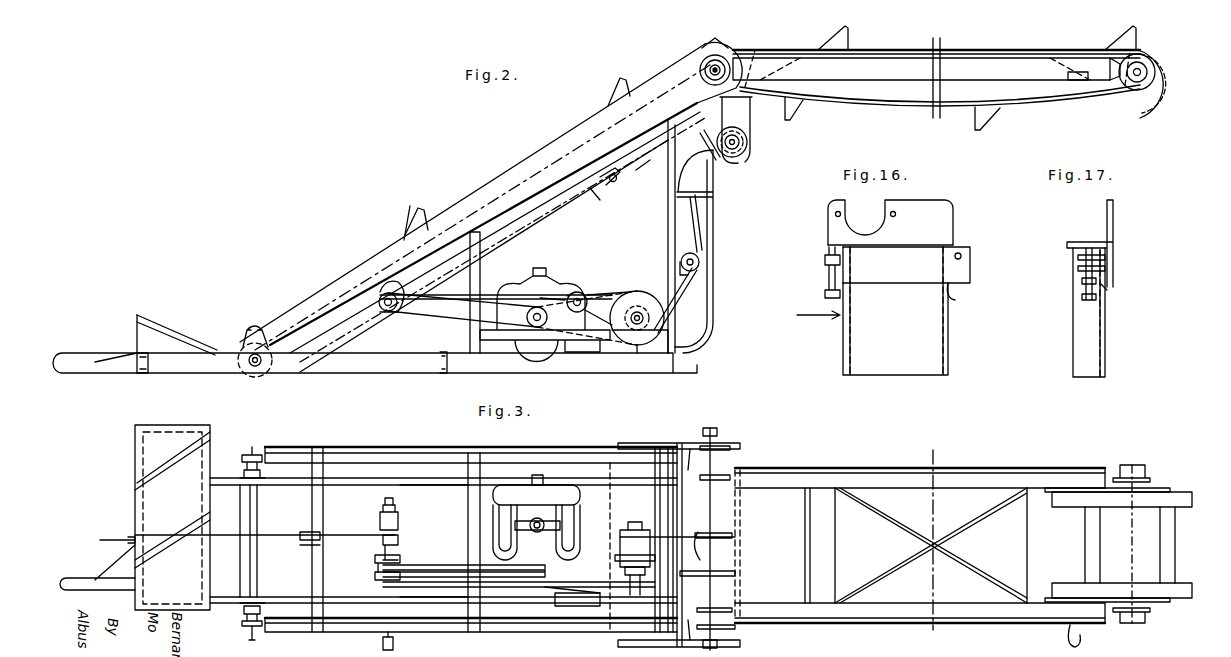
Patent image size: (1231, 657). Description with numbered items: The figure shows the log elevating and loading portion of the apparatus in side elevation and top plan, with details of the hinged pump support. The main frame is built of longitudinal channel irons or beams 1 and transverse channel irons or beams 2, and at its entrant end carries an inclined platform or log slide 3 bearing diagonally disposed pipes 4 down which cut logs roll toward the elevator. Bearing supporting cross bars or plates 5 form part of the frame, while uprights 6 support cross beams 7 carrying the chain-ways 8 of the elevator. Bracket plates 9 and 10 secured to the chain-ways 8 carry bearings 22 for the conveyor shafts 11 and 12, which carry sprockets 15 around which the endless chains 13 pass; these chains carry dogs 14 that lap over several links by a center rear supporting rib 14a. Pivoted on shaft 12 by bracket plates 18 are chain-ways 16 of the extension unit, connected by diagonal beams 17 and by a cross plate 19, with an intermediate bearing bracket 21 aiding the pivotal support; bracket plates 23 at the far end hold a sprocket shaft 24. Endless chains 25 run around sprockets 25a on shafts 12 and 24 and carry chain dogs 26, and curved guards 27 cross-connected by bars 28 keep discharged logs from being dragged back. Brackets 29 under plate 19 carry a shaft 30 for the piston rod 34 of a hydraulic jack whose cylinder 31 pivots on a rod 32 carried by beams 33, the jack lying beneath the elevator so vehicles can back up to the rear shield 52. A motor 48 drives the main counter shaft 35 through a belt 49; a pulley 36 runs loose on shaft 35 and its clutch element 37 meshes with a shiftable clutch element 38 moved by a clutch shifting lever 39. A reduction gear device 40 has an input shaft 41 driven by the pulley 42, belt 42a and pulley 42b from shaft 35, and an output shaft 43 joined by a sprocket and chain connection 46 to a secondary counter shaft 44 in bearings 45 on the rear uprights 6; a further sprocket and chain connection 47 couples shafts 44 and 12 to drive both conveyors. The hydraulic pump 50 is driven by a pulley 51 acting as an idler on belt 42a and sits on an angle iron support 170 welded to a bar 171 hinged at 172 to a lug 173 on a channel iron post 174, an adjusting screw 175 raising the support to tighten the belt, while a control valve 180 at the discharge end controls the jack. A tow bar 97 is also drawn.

In FIG. 2, the longitudinal channel irons or beams 1 is at (195, 370).
In FIG. 3, the longitudinal channel irons or beams 1 is at (224, 486).
In FIG. 2, the transverse channel irons or beams 2 is at (147, 361).
In FIG. 3, the transverse channel irons or beams 2 is at (137, 506).
In FIG. 2, the inclined platform or log slide 3 is at (137, 333).
In FIG. 3, the inclined platform or log slide 3 is at (150, 514).
In FIG. 2, the diagonally disposed pipes 4 is at (170, 329).
In FIG. 3, the diagonally disposed pipes 4 is at (170, 466).
In FIG. 3, the bearing supporting cross bars or plates 5 is at (398, 500).
In FIG. 2, the uprights 6 is at (668, 225).
In FIG. 2, the cross beams 7 is at (480, 225).
In FIG. 3, the cross beams 7 is at (468, 516).
In FIG. 2, the chain-ways 8 is at (299, 305).
In FIG. 3, the chain-ways 8 is at (450, 452).
In FIG. 2, the bracket plates 9 is at (332, 335).
In FIG. 3, the bracket plates 9 is at (311, 501).
In FIG. 3, the bracket plates 10 is at (735, 445).
In FIG. 2, the conveyor shaft 11 is at (256, 368).
In FIG. 3, the conveyor shaft 11 is at (258, 512).
In FIG. 2, the conveyor shaft 12 is at (718, 66).
In FIG. 2, the endless chains 13 is at (517, 170).
In FIG. 2, the dogs 14 is at (418, 210).
In FIG. 2, the center rear supporting rib 14a is at (410, 230).
In FIG. 2, the sprockets 15 is at (257, 342).
In FIG. 3, the sprockets 15 is at (248, 456).
In FIG. 2, the chain-ways 16 is at (1025, 66).
In FIG. 3, the chain-ways 16 is at (887, 475).
In FIG. 3, the diagonal beams 17 is at (960, 520).
In FIG. 3, the bracket plates 18 is at (812, 495).
In FIG. 3, the cross plate 19 is at (808, 540).
In FIG. 3, the intermediate bearing bracket 21 is at (718, 535).
In FIG. 2, the bearings 22 is at (707, 56).
In FIG. 2, the bracket plates 23 is at (1118, 85).
In FIG. 3, the bracket plates 23 is at (1165, 490).
In FIG. 2, the sprocket shaft 24 is at (1145, 62).
In FIG. 3, the sprocket shaft 24 is at (1131, 538).
In FIG. 2, the endless chains 25 is at (1018, 108).
In FIG. 2, the sprockets 25a is at (1145, 105).
In FIG. 3, the sprockets 25a is at (732, 478).
In FIG. 2, the chain dogs 26 is at (978, 115).
In FIG. 2, the curved guards 27 is at (1166, 110).
In FIG. 3, the curved guards 27 is at (1064, 508).
In FIG. 3, the bars 28 is at (1176, 552).
In FIG. 2, the brackets 29 is at (752, 130).
In FIG. 2, the shaft 30 is at (745, 150).
In FIG. 2, the cylinder 31 is at (642, 175).
In FIG. 3, the cylinder 31 is at (618, 551).
In FIG. 2, the rod 32 is at (612, 183).
In FIG. 2, the beams 33 is at (592, 191).
In FIG. 2, the piston rod 34 is at (718, 165).
In FIG. 3, the piston rod 34 is at (720, 545).
In FIG. 2, the main counter shaft 35 is at (385, 292).
In FIG. 3, the main counter shaft 35 is at (382, 647).
In FIG. 2, the pulley 36 is at (378, 302).
In FIG. 3, the pulley 36 is at (376, 560).
In FIG. 3, the clutch element 37 is at (400, 545).
In FIG. 3, the shiftable clutch element 38 is at (380, 521).
In FIG. 3, the clutch shifting lever 39 is at (279, 543).
In FIG. 3, the reduction gear device 40 is at (630, 578).
In FIG. 2, the input shaft 41 is at (640, 335).
In FIG. 2, the pulley 42 is at (652, 327).
In FIG. 2, the belt 42a is at (615, 345).
In FIG. 3, the belt 42a is at (548, 590).
In FIG. 2, the pulley 42b is at (375, 290).
In FIG. 3, the pulley 42b is at (376, 585).
In FIG. 3, the output shaft 43 is at (637, 528).
In FIG. 2, the secondary counter shaft 44 is at (700, 260).
In FIG. 3, the secondary counter shaft 44 is at (642, 578).
In FIG. 3, the bearings 45 is at (690, 447).
In FIG. 2, the sprocket and chain connection 46 is at (690, 285).
In FIG. 3, the sprocket and chain connection 46 is at (737, 574).
In FIG. 2, the sprocket and chain connection 47 is at (702, 228).
In FIG. 3, the sprocket and chain connection 47 is at (640, 560).
In FIG. 2, the motor 48 is at (535, 342).
In FIG. 3, the motor 48 is at (560, 490).
In FIG. 2, the belt 49 is at (425, 322).
In FIG. 3, the belt 49 is at (448, 565).
In FIG. 2, the hydraulic pump 50 is at (587, 298).
In FIG. 3, the hydraulic pump 50 is at (578, 608).
In FIG. 2, the pulley 51 is at (580, 292).
In FIG. 3, the pulley 51 is at (612, 571).
In FIG. 2, the rear shield 52 is at (714, 326).
In FIG. 2, the tow bar 97 is at (78, 368).
In FIG. 3, the tow bar 97 is at (87, 580).
In FIG. 16, the angle iron support 170 is at (940, 222).
In FIG. 17, the angle iron support 170 is at (1113, 220).
In FIG. 16, the bar 171 is at (901, 278).
In FIG. 17, the bar 171 is at (1106, 268).
In FIG. 16, the hinge 172 is at (962, 256).
In FIG. 16, the lug 173 is at (958, 291).
In FIG. 17, the lug 173 is at (1104, 288).
In FIG. 16, the channel iron post 174 is at (935, 337).
In FIG. 17, the channel iron post 174 is at (1092, 325).
In FIG. 16, the adjusting screw 175 is at (828, 280).
In FIG. 17, the adjusting screw 175 is at (1085, 286).
In FIG. 2, the control valve 180 is at (1078, 72).